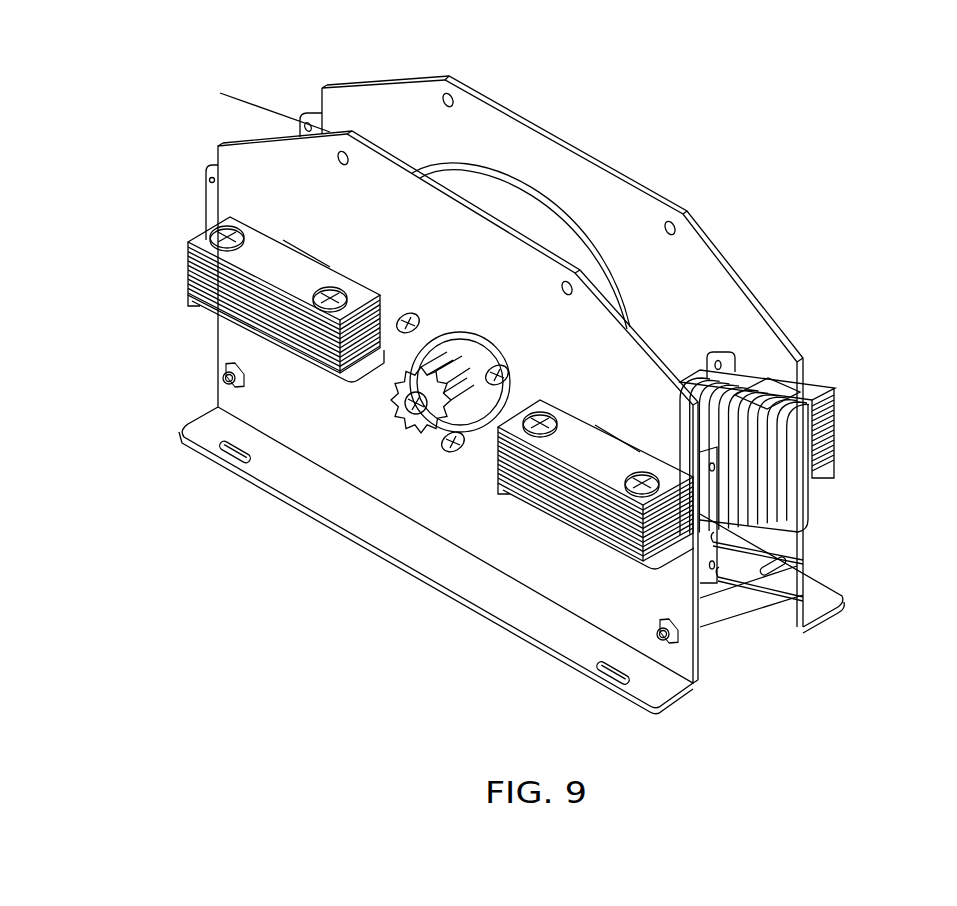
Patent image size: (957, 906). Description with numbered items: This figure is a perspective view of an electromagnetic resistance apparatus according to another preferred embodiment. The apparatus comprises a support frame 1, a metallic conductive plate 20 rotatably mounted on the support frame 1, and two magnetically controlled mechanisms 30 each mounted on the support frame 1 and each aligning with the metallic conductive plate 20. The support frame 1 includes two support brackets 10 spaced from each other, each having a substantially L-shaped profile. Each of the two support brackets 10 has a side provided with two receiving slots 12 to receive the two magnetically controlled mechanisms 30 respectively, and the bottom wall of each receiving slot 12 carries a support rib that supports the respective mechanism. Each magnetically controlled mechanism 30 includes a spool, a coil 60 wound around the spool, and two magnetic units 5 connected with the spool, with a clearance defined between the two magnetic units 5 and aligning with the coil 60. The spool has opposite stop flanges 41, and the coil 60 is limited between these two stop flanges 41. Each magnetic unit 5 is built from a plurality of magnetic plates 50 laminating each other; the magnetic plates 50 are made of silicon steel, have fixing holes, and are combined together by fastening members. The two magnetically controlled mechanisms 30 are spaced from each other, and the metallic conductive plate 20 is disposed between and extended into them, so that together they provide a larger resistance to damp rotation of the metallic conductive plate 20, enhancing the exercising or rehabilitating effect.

The support frame 1 is at (758, 258).
The magnetic unit 5 is at (855, 422).
The support bracket 10 is at (613, 593).
The receiving slot 12 is at (372, 360).
The metallic conductive plate 20 is at (517, 208).
The magnetically controlled mechanism 30 is at (496, 437).
The stop flange 41 is at (217, 213).
The magnetic plate 50 is at (305, 288).
The coil 60 is at (788, 473).